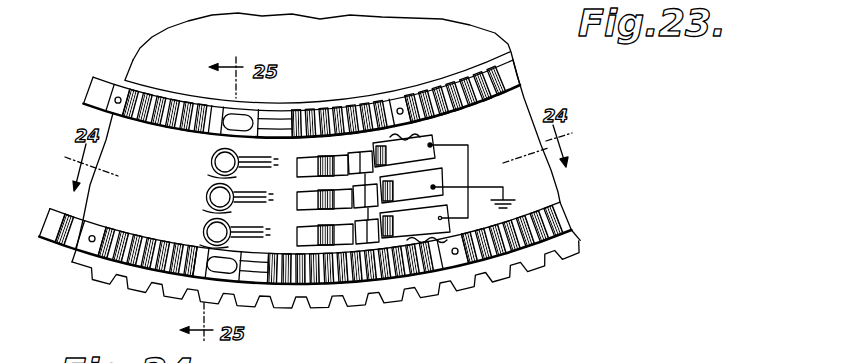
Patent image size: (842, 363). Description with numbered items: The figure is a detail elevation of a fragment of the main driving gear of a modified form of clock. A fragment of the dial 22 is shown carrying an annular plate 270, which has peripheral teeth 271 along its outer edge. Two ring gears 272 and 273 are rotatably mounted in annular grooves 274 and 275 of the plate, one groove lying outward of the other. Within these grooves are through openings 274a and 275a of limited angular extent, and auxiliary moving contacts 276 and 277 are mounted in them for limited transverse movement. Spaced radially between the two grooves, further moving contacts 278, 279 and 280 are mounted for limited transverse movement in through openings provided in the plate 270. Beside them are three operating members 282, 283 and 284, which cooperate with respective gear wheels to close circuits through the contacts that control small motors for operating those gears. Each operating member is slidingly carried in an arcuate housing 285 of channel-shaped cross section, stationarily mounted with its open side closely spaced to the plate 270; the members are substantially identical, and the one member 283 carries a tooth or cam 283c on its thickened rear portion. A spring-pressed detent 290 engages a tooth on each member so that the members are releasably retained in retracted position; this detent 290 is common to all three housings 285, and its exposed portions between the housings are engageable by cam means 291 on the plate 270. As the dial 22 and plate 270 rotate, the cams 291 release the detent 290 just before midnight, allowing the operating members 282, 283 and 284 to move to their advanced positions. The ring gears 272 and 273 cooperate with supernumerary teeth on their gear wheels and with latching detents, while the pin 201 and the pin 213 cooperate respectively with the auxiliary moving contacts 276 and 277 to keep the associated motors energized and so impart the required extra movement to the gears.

The dial 22 is at (443, 33).
The pin 201 is at (116, 98).
The pin 213 is at (75, 244).
The annular plate 270 is at (555, 178).
The peripheral teeth 271 is at (578, 255).
The ring gear 272 is at (515, 74).
The ring gear 273 is at (576, 211).
The annular groove 274 is at (291, 126).
The through opening 274a is at (267, 117).
The annular groove 275 is at (303, 285).
The through opening 275a is at (259, 286).
The auxiliary moving contact 276 is at (230, 112).
The auxiliary moving contact 277 is at (207, 273).
The moving contact 278 is at (212, 156).
The moving contact 279 is at (207, 193).
The moving contact 280 is at (204, 230).
The operating member 282 is at (317, 154).
The operating member 283 is at (323, 190).
The tooth or cam 283c is at (333, 208).
The operating member 284 is at (333, 247).
The arcuate housing 285 is at (438, 160).
The spring pressed detent 290 is at (411, 186).
The cam means 291 is at (210, 171).